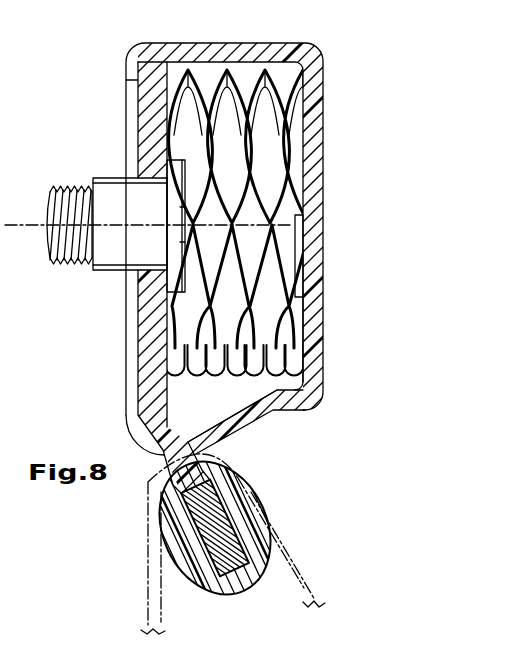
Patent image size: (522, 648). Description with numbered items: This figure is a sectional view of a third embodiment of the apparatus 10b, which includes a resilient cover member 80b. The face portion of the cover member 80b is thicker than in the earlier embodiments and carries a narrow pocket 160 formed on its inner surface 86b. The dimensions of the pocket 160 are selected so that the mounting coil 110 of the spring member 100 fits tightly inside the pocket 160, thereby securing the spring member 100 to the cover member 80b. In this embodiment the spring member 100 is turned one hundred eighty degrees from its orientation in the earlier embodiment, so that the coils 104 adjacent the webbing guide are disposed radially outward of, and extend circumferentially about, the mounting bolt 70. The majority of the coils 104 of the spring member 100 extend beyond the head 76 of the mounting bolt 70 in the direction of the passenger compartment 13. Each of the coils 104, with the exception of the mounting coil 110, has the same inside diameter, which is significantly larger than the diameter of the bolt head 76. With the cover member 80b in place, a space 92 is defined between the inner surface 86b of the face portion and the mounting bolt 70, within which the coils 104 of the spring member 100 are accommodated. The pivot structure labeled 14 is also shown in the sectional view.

The apparatus 10b is at (272, 34).
The coils 104 is at (224, 74).
The resilient cover member 80b is at (324, 68).
The head of the mounting bolt 76 is at (172, 188).
The mounting bolt 70 is at (70, 183).
The spring member 100 is at (310, 179).
The mounting coil 110 is at (306, 246).
The narrow pocket 160 is at (298, 287).
The passenger compartment 13 is at (366, 379).
The inner surface 86b is at (318, 385).
The space 92 is at (213, 398).
The pivot shaft 14 is at (282, 540).